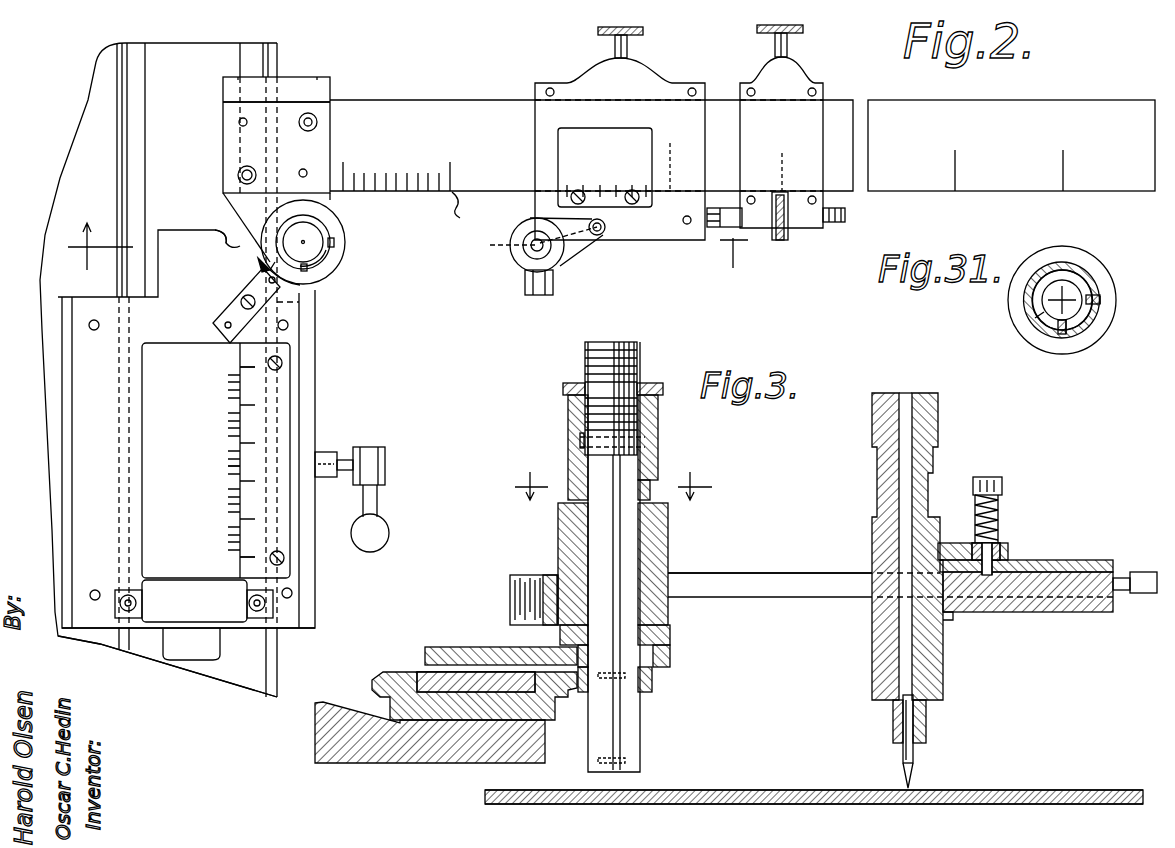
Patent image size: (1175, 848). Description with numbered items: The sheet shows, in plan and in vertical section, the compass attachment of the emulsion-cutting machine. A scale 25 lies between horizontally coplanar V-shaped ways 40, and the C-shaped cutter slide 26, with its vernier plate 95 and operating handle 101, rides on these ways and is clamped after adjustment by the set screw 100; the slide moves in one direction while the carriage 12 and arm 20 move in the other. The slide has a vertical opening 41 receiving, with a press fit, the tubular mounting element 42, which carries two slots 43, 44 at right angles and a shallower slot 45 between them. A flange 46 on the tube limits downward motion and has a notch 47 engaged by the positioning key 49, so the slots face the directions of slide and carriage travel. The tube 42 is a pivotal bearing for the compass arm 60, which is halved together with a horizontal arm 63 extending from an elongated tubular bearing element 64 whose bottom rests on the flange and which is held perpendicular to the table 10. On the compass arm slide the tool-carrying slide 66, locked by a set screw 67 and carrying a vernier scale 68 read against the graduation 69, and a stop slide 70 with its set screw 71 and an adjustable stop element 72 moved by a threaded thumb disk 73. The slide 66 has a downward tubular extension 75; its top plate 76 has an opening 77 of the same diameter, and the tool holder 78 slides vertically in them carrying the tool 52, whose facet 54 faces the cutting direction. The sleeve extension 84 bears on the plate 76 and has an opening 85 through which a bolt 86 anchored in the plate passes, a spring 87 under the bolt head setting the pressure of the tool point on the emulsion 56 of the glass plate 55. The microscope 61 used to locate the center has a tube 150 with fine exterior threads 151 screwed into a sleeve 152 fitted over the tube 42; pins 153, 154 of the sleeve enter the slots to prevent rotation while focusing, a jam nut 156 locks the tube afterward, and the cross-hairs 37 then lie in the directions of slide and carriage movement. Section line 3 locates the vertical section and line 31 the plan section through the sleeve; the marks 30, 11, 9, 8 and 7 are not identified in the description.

In FIG. 2, the carriage 12 is at (78, 160).
In FIG. 2, the V-shaped ways 40 is at (117, 192).
In FIG. 3, the V-shaped ways 40 is at (372, 658).
In FIG. 2, the section line 3— 3 is at (399, 249).
In FIG. 2, the notch 30 is at (211, 236).
In FIG. 2, the horizontal arm 63 is at (330, 88).
In FIG. 3, the horizontal arm 63 is at (510, 600).
In FIG. 2, the head top strip 11 is at (222, 127).
In FIG. 2, the compass arm 60 is at (495, 90).
In FIG. 3, the compass arm 60 is at (790, 556).
In FIG. 2, the graduation 69 is at (451, 212).
In FIG. 2, the tubular bearing element 64 is at (345, 244).
In FIG. 31, the tubular bearing element 64 is at (1100, 350).
In FIG. 3, the tubular bearing element 64 is at (558, 529).
In FIG. 2, the shallower slot 45 is at (337, 262).
In FIG. 2, the slot 44 is at (334, 238).
In FIG. 31, the slot 44 is at (1100, 296).
In FIG. 3, the slot 44 is at (648, 455).
In FIG. 2, the slot 43 is at (307, 284).
In FIG. 31, the slot 43 is at (1080, 340).
In FIG. 2, the vertical opening 41 is at (304, 216).
In FIG. 3, the vertical opening 41 is at (672, 656).
In FIG. 2, the notch 47 is at (262, 266).
In FIG. 2, the positioning key 49 is at (215, 310).
In FIG. 2, the cutter slide 26 is at (316, 390).
In FIG. 2, the vernier plate 95 is at (250, 503).
In FIG. 2, the scale mark 9 is at (240, 353).
In FIG. 2, the scale mark 8 is at (240, 461).
In FIG. 2, the scale mark 7 is at (240, 571).
In FIG. 2, the operating handle 101 is at (194, 601).
In FIG. 2, the set screw 100 is at (352, 452).
In FIG. 2, the scale 25 is at (258, 649).
In FIG. 3, the scale 25 is at (416, 668).
In FIG. 2, the arm 20 is at (100, 645).
In FIG. 3, the arm 20 is at (450, 752).
In FIG. 2, the tool-carrying slide 66 is at (535, 150).
In FIG. 3, the tool-carrying slide 66 is at (1070, 612).
In FIG. 2, the set screw 67 is at (628, 48).
In FIG. 2, the vernier scale 68 is at (622, 217).
In FIG. 2, the adjustable stop element 72 is at (722, 228).
In FIG. 2, the stop slide 70 is at (818, 110).
In FIG. 2, the set screw 71 is at (788, 45).
In FIG. 2, the threaded thumb disk 73 is at (784, 241).
In FIG. 31, the sleeve 152 is at (1082, 272).
In FIG. 3, the sleeve 152 is at (655, 432).
In FIG. 31, the tube 150 is at (1032, 300).
In FIG. 3, the tube 150 is at (640, 355).
In FIG. 31, the cross-hairs 37 is at (1055, 290).
In FIG. 31, the pin 154 is at (1100, 304).
In FIG. 3, the pin 154 is at (658, 490).
In FIG. 31, the tubular mounting element 42 is at (1040, 318).
In FIG. 3, the tubular mounting element 42 is at (654, 684).
In FIG. 31, the pin 153 is at (1062, 334).
In FIG. 3, the exterior threads 151 is at (640, 375).
In FIG. 3, the jam nut 156 is at (563, 392).
In FIG. 3, the section line 31— 31 is at (613, 483).
In FIG. 3, the microscope 61 is at (668, 548).
In FIG. 3, the flange 46 is at (672, 632).
In FIG. 3, the table 10 is at (735, 778).
In FIG. 3, the glass plate 55 is at (982, 790).
In FIG. 3, the emulsion coating 56 is at (1040, 790).
In FIG. 3, the opening 77 is at (872, 565).
In FIG. 3, the tool holder 78 is at (872, 498).
In FIG. 3, the tubular extension 75 is at (943, 650).
In FIG. 3, the tool 52 is at (915, 752).
In FIG. 3, the facet 54 is at (912, 770).
In FIG. 3, the top plate 76 is at (1078, 553).
In FIG. 3, the extension 84 is at (1008, 545).
In FIG. 3, the opening 85 is at (1000, 543).
In FIG. 3, the bolt 86 is at (975, 498).
In FIG. 3, the spring 87 is at (1002, 490).